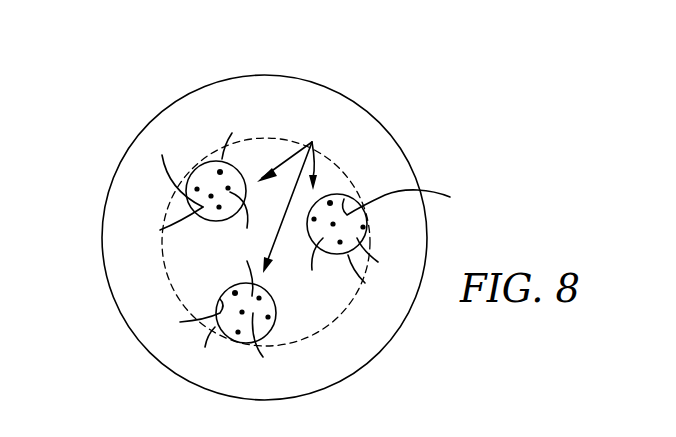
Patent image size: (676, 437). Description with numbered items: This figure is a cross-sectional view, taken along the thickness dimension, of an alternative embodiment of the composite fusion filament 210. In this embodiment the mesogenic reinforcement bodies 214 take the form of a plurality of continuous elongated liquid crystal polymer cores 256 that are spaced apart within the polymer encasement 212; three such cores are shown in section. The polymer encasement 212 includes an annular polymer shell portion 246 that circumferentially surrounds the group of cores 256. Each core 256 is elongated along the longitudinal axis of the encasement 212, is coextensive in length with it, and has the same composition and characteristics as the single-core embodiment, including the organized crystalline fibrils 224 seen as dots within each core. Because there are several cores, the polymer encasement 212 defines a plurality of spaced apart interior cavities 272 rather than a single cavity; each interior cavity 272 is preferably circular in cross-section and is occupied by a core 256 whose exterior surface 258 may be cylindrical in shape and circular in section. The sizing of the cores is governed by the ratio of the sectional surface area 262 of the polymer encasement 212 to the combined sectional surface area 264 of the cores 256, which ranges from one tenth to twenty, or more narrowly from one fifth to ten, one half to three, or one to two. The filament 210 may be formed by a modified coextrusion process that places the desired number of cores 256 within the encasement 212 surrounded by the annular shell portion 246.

The composite fusion filament 210 is at (84, 122).
The polymer encasement 212 is at (229, 83).
The mesogenic reinforcement bodies 214 is at (300, 193).
The organized crystalline fibrils 224 is at (220, 172).
The annular polymer shell portion 246 is at (382, 143).
The continuous elongated liquid crystal polymer cores 256 is at (285, 258).
The exterior surface 258 is at (295, 242).
The sectional surface area of the polymer encasement 262 is at (364, 364).
The combined sectional surface area of the cores 264 is at (274, 248).
The interior cavities 272 is at (301, 262).